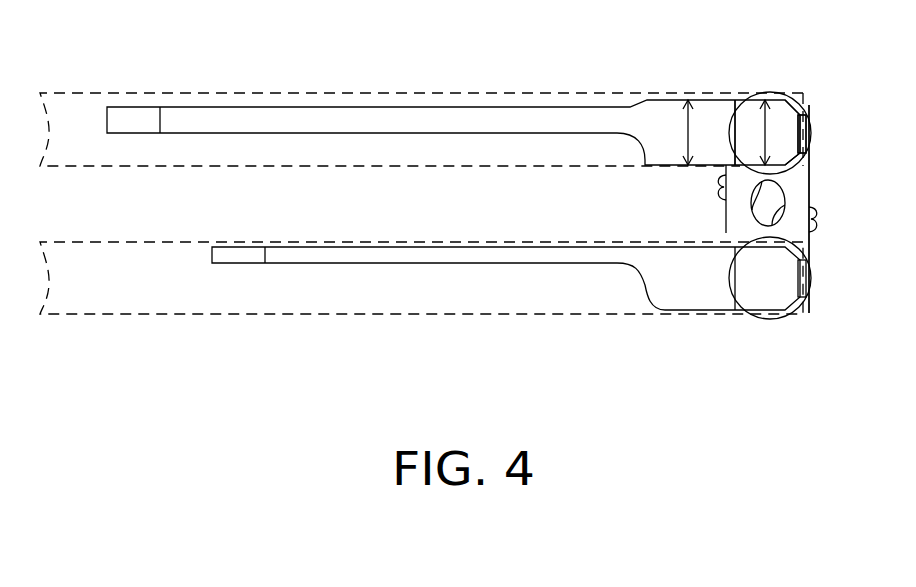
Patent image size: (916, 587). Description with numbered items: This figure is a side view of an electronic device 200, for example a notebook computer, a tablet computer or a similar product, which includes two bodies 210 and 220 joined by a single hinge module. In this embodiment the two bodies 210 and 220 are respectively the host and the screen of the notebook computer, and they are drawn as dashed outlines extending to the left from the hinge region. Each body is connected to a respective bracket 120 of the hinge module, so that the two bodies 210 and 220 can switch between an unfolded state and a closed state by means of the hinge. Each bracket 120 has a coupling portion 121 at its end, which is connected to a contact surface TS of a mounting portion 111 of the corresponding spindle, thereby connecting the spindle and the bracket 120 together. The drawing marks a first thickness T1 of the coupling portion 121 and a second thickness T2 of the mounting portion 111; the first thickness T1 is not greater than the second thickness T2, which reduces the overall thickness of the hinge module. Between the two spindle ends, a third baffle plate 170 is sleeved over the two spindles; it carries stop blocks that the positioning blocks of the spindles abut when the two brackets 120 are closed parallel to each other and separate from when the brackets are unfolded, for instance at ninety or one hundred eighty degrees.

The electronic device 200 is at (883, 418).
The body 210 is at (70, 102).
The body 220 is at (67, 303).
The bracket 120 is at (453, 117).
The coupling portion 121 is at (657, 117).
The first thickness T1 is at (702, 123).
The second thickness T2 is at (775, 127).
The contact surface TS is at (733, 128).
The mounting portion 111 is at (788, 132).
The third baffle plate 170 is at (800, 190).